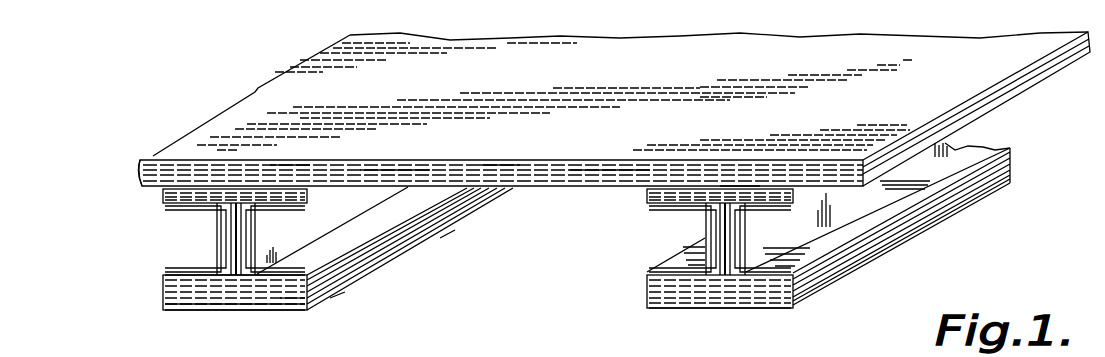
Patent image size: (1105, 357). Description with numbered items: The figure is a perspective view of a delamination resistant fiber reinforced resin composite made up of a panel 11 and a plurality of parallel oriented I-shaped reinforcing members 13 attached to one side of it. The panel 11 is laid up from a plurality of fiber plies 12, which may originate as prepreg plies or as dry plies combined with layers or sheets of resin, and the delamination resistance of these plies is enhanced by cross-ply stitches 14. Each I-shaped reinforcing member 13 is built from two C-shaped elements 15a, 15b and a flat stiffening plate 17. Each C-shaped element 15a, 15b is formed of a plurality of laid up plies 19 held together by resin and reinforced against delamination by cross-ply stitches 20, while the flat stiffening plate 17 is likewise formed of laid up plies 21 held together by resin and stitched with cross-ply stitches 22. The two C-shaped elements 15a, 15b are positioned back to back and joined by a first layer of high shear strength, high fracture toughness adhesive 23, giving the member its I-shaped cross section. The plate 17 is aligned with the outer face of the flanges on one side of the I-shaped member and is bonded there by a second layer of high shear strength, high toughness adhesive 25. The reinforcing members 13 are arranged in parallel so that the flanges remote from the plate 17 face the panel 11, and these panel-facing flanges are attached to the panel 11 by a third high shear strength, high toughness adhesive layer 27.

The panel 11 is at (614, 77).
The fiber plies 12 is at (295, 172).
The I-shaped reinforcing members 13 is at (148, 325).
The cross-ply stitches 14 is at (427, 163).
The C-shaped element 15a is at (190, 268).
The C-shaped element 15b is at (360, 233).
The flat stiffening plate 17 is at (223, 311).
The laid up plies 19 is at (218, 235).
The cross-ply stitches 20 is at (287, 202).
The laid up plies 21 is at (305, 311).
The cross-ply stitches 22 is at (355, 285).
The first layer of adhesive 23 is at (236, 252).
The second layer of adhesive 25 is at (196, 311).
The third adhesive layer 27 is at (152, 160).